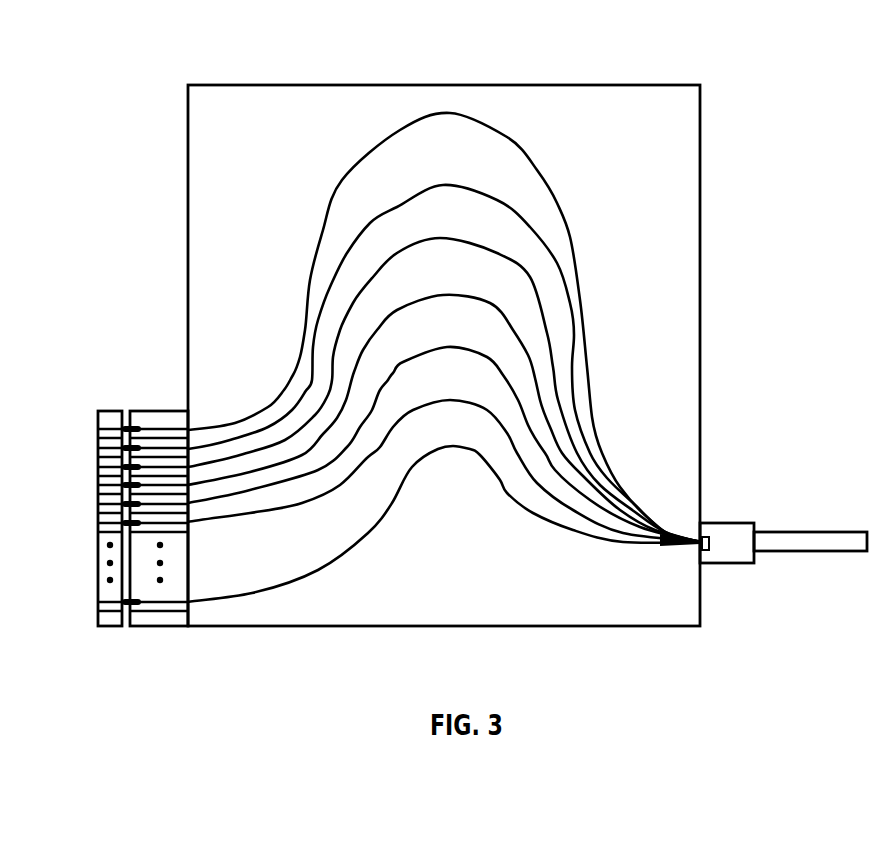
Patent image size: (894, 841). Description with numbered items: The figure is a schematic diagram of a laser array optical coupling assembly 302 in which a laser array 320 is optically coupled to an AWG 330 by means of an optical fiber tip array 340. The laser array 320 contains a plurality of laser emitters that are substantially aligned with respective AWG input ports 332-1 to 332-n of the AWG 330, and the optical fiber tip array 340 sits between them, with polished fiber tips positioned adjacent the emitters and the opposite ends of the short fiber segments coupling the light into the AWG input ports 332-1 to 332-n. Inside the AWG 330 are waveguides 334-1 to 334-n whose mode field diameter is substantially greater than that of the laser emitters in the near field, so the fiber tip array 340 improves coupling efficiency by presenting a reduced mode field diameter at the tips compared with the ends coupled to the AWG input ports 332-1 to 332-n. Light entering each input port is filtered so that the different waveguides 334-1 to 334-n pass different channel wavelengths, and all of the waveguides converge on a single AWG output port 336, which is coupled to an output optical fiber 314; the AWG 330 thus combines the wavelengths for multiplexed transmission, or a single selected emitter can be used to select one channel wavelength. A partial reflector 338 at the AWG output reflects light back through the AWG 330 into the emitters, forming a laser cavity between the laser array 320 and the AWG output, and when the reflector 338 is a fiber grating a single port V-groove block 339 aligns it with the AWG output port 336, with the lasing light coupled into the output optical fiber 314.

The laser array optical coupling assembly 302 is at (138, 346).
The output optical fiber 314 is at (833, 530).
The laser array 320 is at (102, 627).
The AWG 330 is at (477, 85).
The AWG input port 332-1 is at (192, 432).
The AWG input port 332-n is at (192, 602).
The waveguide 334-1 is at (343, 183).
The waveguide 334-n is at (382, 527).
The AWG output port 336 is at (693, 547).
The partial reflector 338 is at (718, 538).
The single port V-groove block 339 is at (757, 528).
The optical fiber tip array 340 is at (162, 627).